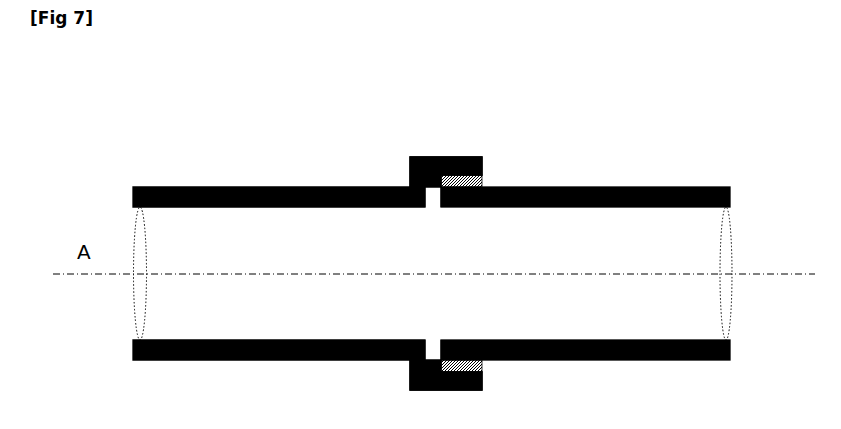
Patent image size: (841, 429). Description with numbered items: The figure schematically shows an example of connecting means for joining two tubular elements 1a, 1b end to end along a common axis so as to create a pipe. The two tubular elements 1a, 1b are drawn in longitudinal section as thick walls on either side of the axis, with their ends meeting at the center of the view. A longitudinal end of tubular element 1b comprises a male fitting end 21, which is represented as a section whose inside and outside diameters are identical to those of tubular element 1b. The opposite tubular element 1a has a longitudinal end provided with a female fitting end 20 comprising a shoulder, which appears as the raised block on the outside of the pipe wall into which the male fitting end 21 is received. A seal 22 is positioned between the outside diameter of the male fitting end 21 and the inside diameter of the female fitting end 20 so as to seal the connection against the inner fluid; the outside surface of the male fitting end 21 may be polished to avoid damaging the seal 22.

The tubular element 1a is at (245, 187).
The tubular element 1b is at (623, 187).
The female fitting end 20 is at (433, 157).
The male fitting end 21 is at (467, 208).
The seal 22 is at (480, 182).